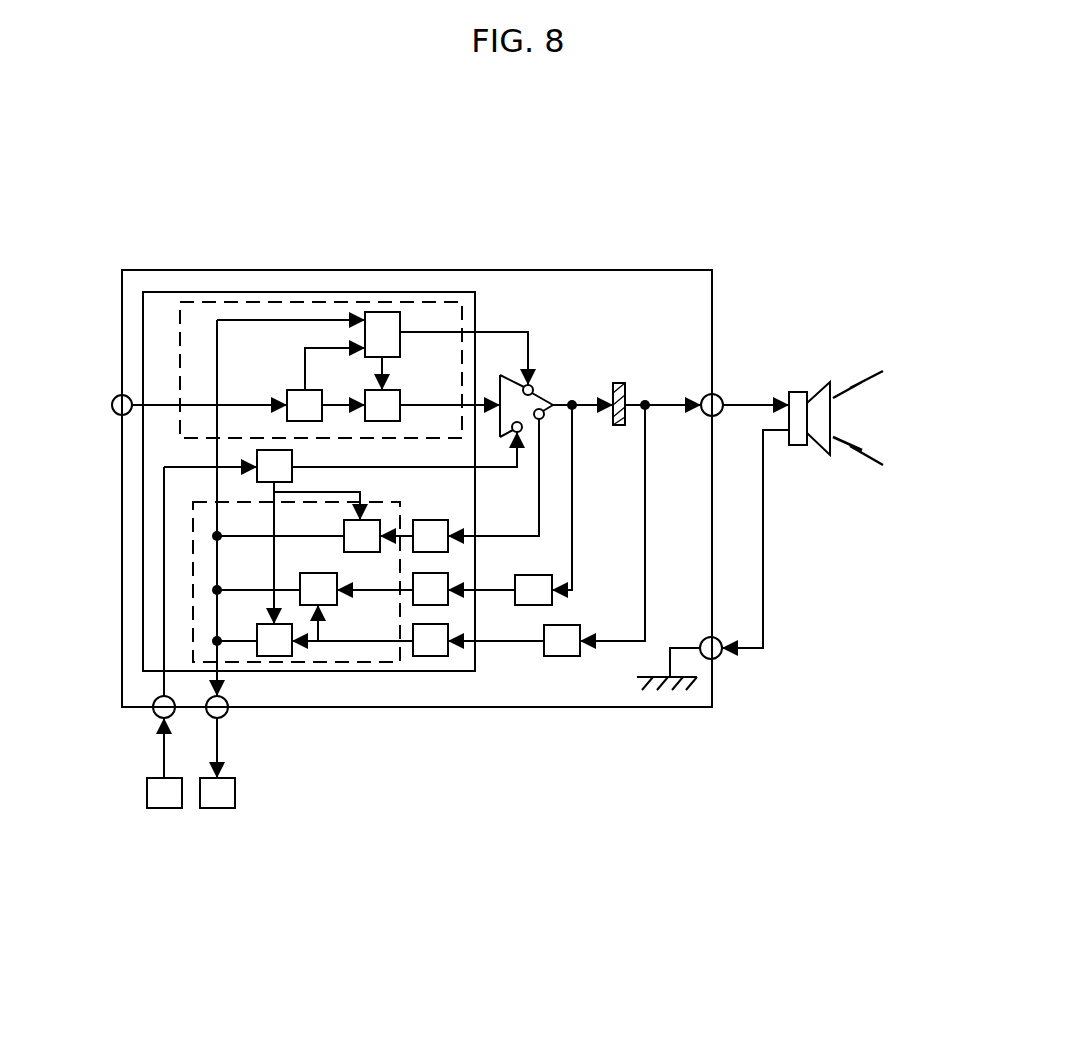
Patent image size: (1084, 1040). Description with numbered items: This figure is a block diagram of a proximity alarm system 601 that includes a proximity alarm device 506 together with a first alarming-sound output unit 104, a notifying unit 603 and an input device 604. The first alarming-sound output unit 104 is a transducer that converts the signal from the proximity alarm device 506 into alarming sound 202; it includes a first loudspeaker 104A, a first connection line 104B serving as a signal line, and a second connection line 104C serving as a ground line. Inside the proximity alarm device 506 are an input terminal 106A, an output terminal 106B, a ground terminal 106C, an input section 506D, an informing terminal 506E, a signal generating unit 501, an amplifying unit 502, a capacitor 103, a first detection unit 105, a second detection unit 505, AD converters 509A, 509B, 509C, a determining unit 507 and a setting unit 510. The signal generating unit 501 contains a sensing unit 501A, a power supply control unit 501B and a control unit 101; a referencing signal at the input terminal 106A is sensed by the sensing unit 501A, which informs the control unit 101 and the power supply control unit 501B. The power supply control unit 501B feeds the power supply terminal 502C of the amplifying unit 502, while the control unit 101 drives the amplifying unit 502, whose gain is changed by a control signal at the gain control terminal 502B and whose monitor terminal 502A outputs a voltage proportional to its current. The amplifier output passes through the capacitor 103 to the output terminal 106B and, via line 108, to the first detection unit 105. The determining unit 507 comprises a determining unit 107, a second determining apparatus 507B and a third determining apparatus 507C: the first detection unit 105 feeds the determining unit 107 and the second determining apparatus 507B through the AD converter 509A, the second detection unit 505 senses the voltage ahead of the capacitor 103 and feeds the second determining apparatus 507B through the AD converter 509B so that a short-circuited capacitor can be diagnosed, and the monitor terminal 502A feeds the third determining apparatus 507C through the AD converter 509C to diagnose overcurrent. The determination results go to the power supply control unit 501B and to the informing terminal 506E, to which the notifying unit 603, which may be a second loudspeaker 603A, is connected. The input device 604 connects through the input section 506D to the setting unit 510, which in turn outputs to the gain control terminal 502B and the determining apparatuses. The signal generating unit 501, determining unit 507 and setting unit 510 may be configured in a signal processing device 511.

The control unit 101 is at (375, 390).
The capacitor 103 is at (623, 382).
The first alarming-sound output unit 104 is at (923, 580).
The first loudspeaker 104A is at (818, 427).
The first connection line 104B is at (743, 408).
The second connection line 104C is at (763, 513).
The first detection unit 105 is at (567, 657).
The input terminal 106A is at (113, 395).
The output terminal 106B is at (719, 397).
The ground terminal 106C is at (718, 657).
The determining unit 107 is at (282, 658).
The line 108 is at (647, 522).
The alarming sound 202 is at (847, 428).
The signal generating unit 501 is at (350, 216).
The sensing unit 501A is at (300, 390).
The power supply control unit 501B is at (381, 312).
The amplifying unit 502 is at (637, 212).
The monitor terminal 502A is at (520, 422).
The gain control terminal 502B is at (527, 384).
The power supply terminal 502C is at (544, 410).
The second detection unit 505 is at (548, 606).
The proximity alarm device 506 is at (713, 332).
The input section 506D is at (155, 718).
The informing terminal 506E is at (227, 717).
The determining unit 507 is at (433, 773).
The second determining apparatus 507B is at (333, 607).
The third determining apparatus 507C is at (366, 553).
The AD converter 509A is at (437, 657).
The AD converter 509B is at (450, 606).
The AD converter 509C is at (449, 552).
The setting unit 510 is at (257, 450).
The signal processing device 511 is at (410, 292).
The proximity alarm system 601 is at (818, 270).
The notifying unit 603 is at (256, 800).
The second loudspeaker 603A is at (222, 807).
The input device 604 is at (165, 807).